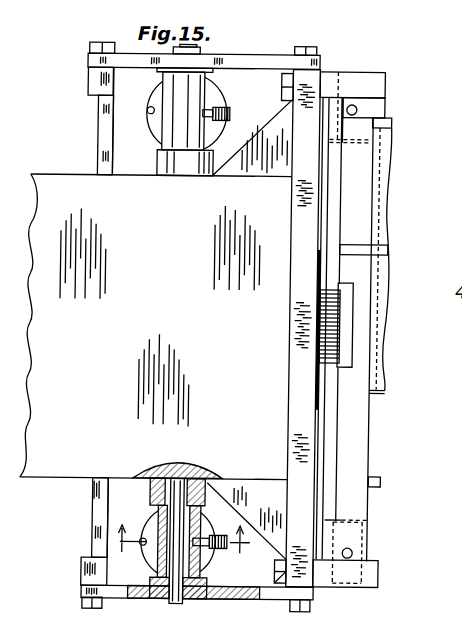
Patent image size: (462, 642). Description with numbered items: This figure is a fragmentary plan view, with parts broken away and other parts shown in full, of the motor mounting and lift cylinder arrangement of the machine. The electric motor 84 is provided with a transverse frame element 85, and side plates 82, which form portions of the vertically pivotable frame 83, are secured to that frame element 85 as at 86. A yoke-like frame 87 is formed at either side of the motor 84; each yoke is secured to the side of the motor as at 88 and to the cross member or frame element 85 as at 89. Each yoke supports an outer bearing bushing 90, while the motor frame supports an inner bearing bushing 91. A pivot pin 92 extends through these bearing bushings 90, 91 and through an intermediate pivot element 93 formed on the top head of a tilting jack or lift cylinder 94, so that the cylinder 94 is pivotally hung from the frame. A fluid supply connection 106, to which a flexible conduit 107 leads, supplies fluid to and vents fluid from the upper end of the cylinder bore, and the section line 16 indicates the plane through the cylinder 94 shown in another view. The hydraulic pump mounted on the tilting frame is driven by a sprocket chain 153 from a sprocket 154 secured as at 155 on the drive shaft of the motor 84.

The section line 16— 16 is at (184, 550).
The side plates 82 is at (329, 74).
The vertically pivotable frame 83 is at (309, 434).
The electric motor 84 is at (54, 470).
The transverse frame element 85 is at (310, 122).
The securing means for side plates 86 is at (278, 88).
The yoke-like frame 87 is at (97, 104).
The securing means to motor side 88 is at (96, 176).
The securing means to cross member 89 is at (296, 46).
The outer bearing bushing 90 is at (172, 598).
The inner bearing bushing 91 is at (196, 160).
The pivot pin 92 is at (182, 478).
The intermediate pivot element 93 is at (174, 129).
The tilting jack or lift cylinder 94 is at (149, 98).
The fluid supply connection 106 is at (210, 598).
The flexible conduit 107 is at (230, 108).
The sprocket chain 153 is at (340, 296).
The sprocket 154 is at (340, 317).
The securing means for sprocket 155 is at (333, 336).